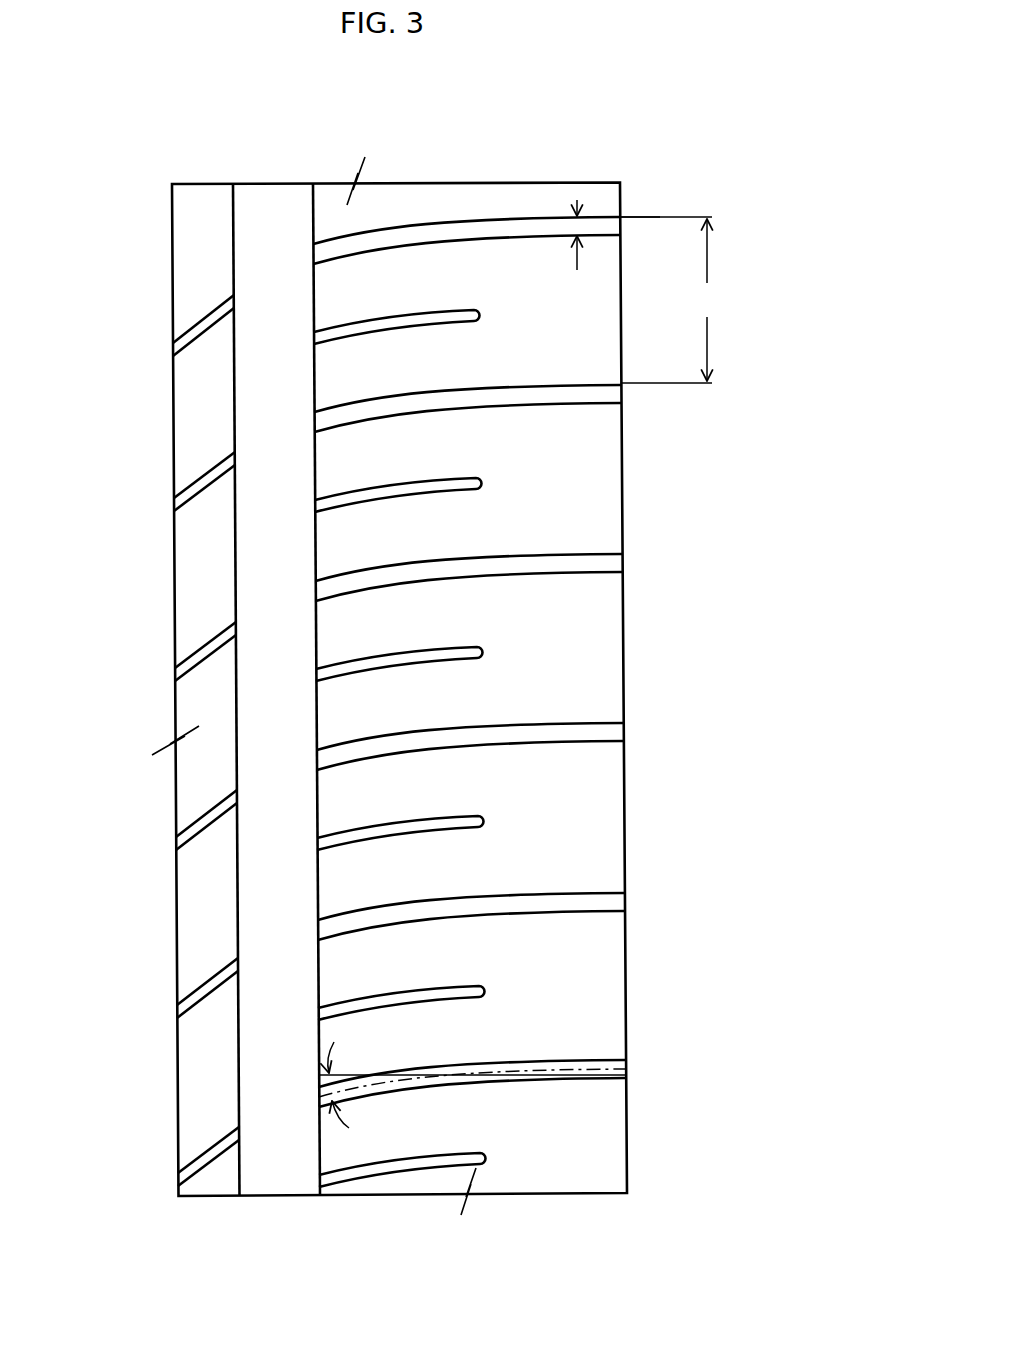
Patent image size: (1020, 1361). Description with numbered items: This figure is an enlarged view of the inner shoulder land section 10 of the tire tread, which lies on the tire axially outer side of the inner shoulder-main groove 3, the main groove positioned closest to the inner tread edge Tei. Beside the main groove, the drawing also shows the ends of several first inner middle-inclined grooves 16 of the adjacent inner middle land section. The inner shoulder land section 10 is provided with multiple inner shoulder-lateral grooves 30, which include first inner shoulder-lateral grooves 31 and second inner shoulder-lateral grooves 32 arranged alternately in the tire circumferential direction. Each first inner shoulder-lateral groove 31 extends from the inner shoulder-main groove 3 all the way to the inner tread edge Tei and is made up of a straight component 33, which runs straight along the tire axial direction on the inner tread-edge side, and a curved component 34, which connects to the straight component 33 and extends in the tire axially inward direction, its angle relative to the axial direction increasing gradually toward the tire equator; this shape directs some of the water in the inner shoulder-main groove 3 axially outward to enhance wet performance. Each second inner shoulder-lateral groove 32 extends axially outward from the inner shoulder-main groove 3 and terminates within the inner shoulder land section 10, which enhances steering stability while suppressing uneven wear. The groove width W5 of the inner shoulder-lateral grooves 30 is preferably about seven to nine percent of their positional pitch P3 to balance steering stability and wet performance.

The inner shoulder-main groove 3 is at (274, 225).
The inner shoulder land section 10 is at (424, 210).
The first inner middle-inclined groove 16 is at (200, 325).
The inner shoulder-lateral groove 30 is at (547, 747).
The first inner shoulder-lateral groove 31 is at (543, 747).
The second inner shoulder-lateral groove 32 is at (433, 482).
The straight component 33 is at (583, 732).
The curved component 34 is at (383, 740).
The groove width W5 is at (575, 215).
The positional pitch P3 is at (672, 300).
The inner tread edge Tei is at (622, 213).